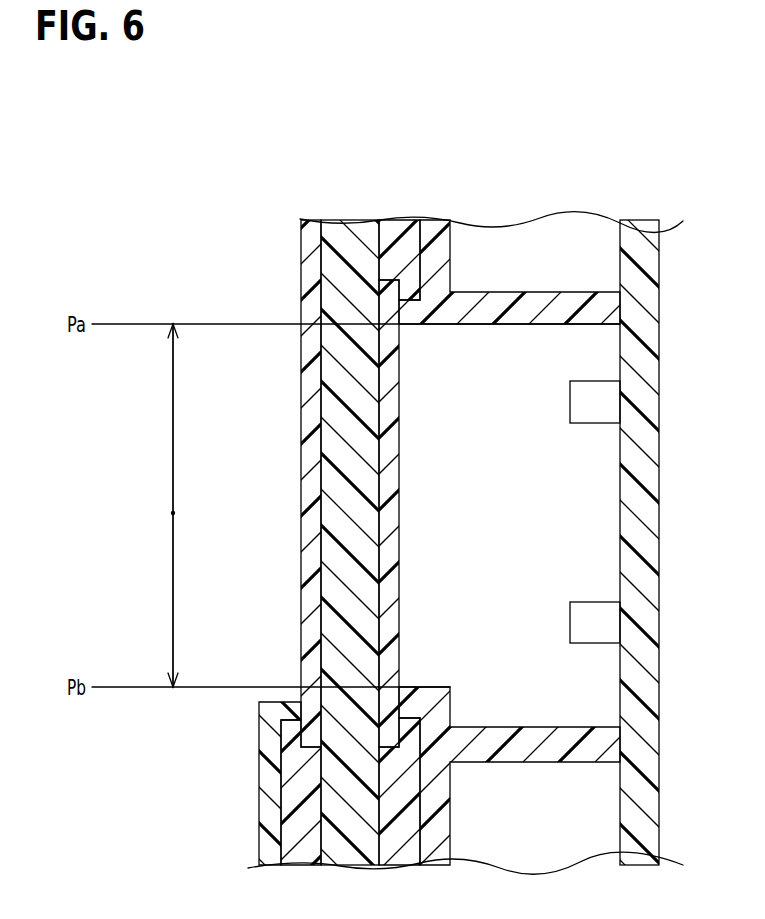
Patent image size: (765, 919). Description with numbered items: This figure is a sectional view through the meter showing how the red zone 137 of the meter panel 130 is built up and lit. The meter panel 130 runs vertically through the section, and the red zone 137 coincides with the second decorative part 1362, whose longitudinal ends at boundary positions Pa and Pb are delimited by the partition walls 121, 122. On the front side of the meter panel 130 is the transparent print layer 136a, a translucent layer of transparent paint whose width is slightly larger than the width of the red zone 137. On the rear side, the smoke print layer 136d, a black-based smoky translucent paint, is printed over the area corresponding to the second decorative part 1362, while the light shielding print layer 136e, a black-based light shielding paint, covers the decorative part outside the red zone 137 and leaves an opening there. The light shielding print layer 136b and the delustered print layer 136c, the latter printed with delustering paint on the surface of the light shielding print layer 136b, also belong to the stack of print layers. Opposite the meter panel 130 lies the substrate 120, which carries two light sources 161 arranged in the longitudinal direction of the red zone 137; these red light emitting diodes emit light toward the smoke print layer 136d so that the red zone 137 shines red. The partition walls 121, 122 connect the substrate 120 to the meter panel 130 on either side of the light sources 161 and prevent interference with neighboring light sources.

The substrate 120 is at (637, 245).
The partition wall 121 is at (533, 310).
The partition wall 122 is at (533, 752).
The meter panel 130 is at (345, 242).
The transparent print layer 136a is at (315, 250).
The light shielding print layer 136b is at (308, 855).
The delustered print layer 136c is at (273, 847).
The smoke print layer 136d is at (387, 405).
The light shielding print layer 136e is at (402, 248).
The second decorative part 1362 is at (173, 513).
The red zone 137 is at (141, 505).
The light source 161 is at (607, 407).